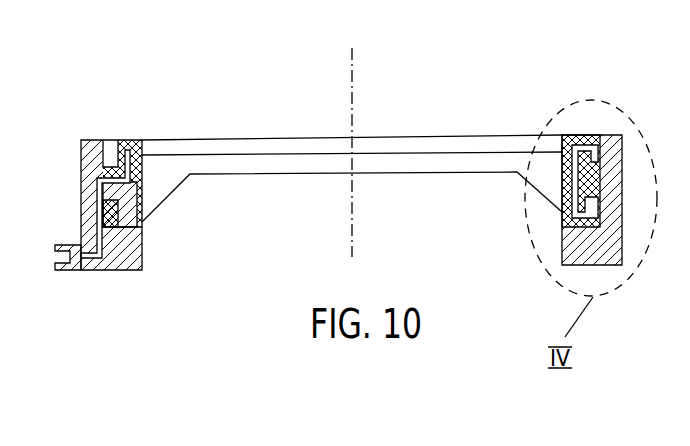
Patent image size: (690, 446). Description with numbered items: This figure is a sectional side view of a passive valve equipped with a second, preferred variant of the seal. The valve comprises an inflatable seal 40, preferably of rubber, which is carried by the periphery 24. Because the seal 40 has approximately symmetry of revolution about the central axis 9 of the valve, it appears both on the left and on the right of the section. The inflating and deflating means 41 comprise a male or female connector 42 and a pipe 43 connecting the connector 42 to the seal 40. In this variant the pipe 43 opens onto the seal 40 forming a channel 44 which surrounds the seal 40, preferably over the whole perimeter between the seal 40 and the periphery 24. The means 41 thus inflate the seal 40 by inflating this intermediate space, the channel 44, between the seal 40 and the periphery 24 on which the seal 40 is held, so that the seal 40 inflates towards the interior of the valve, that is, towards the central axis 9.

The central axis 9 is at (352, 77).
The periphery 24 is at (87, 163).
The inflatable seal 40 is at (118, 140).
The inflating and deflating means 41 is at (300, 244).
The connector 42 is at (72, 268).
The pipe 43 is at (100, 242).
The channel 44 is at (122, 179).